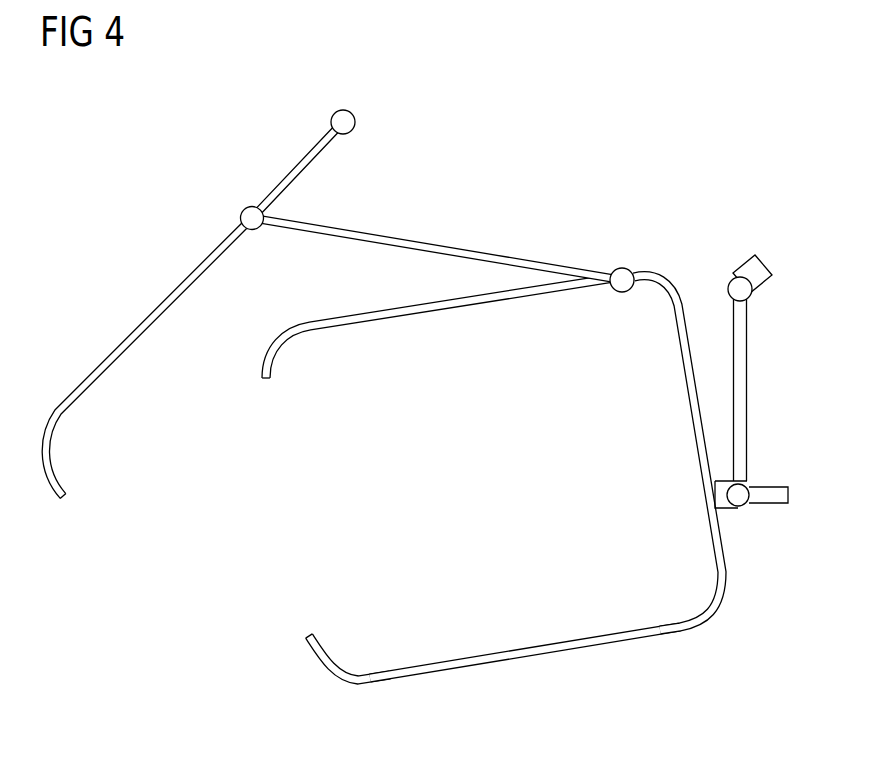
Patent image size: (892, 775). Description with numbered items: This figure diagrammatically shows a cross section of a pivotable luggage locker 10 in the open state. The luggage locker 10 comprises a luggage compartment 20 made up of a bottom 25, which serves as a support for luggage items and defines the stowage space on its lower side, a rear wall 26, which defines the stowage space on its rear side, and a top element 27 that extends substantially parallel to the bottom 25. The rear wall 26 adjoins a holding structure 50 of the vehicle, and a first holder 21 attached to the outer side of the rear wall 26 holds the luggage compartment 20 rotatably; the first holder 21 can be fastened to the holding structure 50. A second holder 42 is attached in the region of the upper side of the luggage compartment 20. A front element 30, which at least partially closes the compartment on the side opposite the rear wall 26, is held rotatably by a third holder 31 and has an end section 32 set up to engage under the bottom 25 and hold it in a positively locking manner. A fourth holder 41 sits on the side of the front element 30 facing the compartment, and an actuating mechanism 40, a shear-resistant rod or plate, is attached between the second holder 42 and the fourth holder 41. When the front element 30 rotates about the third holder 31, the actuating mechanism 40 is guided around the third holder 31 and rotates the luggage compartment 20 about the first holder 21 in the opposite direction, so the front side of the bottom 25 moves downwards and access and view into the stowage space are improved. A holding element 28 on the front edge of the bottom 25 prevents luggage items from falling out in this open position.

The pivotable luggage locker 10 is at (712, 195).
The luggage compartment 20 is at (517, 459).
The first holder 21 is at (723, 507).
The bottom 25 is at (609, 642).
The rear wall 26 is at (700, 430).
The top element 27 is at (492, 293).
The holding element 28 is at (327, 672).
The front element 30 is at (189, 350).
The third holder 31 is at (343, 117).
The end section 32 is at (53, 490).
The actuating mechanism 40 is at (457, 247).
The fourth holder 41 is at (250, 216).
The second holder 42 is at (621, 277).
The holding structure 50 is at (778, 423).